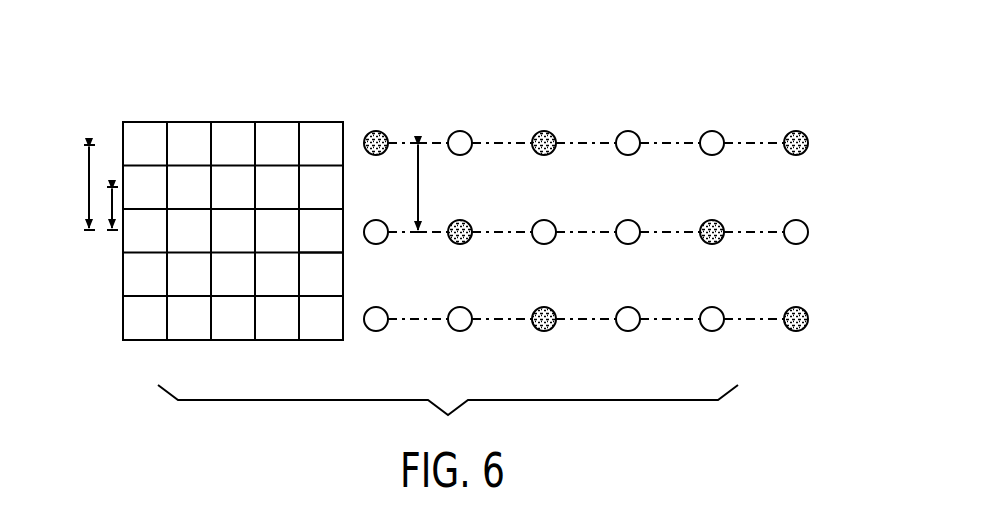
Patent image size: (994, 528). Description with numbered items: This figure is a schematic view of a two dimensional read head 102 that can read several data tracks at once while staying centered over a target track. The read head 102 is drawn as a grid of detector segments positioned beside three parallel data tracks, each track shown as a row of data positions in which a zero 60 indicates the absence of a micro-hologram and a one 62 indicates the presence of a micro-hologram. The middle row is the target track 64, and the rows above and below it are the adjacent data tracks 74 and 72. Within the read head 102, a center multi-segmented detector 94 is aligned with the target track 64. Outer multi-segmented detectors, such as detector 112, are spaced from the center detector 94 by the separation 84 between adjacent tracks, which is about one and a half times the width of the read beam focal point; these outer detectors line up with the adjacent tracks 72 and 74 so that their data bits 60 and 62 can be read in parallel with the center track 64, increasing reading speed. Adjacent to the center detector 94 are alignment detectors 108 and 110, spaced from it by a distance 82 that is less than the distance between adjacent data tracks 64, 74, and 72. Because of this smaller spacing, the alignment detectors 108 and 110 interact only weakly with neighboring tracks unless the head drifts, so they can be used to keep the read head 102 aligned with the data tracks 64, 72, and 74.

The two dimensional read head 102 is at (119, 95).
The alignment detector 110 is at (123, 288).
The outer multi-segmented detector 112 is at (344, 133).
The alignment detector 108 is at (345, 185).
The center multi-segmented detector 94 is at (345, 238).
The separation between adjacent tracks 84 is at (85, 175).
The distance between center detector and alignment detectors 82 is at (111, 196).
The data track 74 is at (660, 142).
The one 62 is at (385, 133).
The zero 60 is at (470, 133).
The target track 64 is at (745, 229).
The data track 72 is at (737, 318).